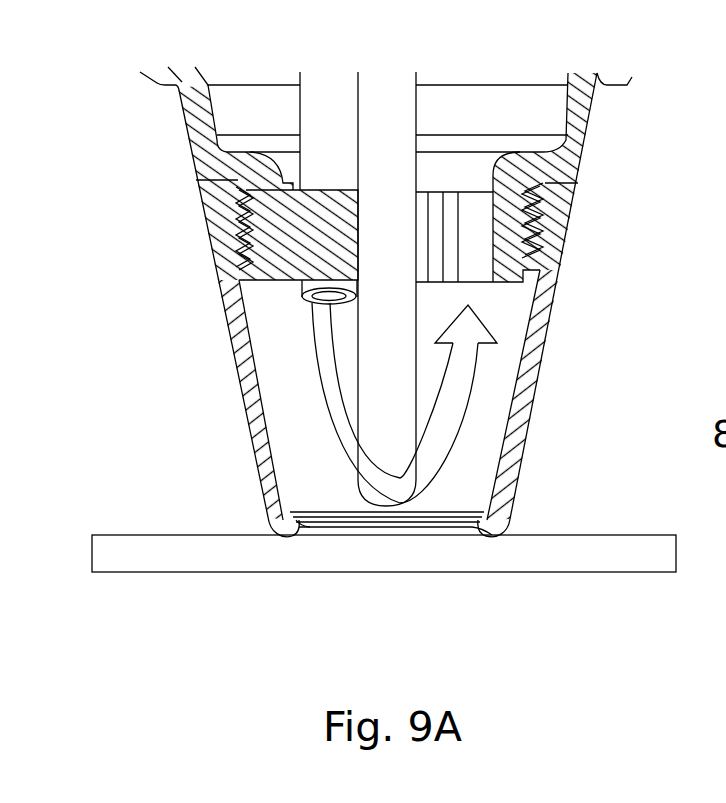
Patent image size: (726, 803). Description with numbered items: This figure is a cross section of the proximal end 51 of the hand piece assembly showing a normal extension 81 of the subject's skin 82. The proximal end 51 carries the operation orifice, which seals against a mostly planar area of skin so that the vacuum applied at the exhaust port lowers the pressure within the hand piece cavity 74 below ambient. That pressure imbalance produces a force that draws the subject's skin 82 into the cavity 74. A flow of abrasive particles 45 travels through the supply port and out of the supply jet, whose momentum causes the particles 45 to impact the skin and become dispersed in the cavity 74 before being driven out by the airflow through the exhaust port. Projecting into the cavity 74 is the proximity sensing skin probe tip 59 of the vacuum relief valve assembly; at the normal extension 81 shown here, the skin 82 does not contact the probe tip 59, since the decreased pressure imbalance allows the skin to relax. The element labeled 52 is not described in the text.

The abrasive particles 45 is at (313, 370).
The proximal end 51 is at (248, 447).
The threaded collar 52 is at (187, 147).
The skin probe tip 59 is at (400, 497).
The hand piece cavity 74 is at (520, 307).
The normal skin extension 81 is at (398, 535).
The subject's skin 82 is at (112, 572).